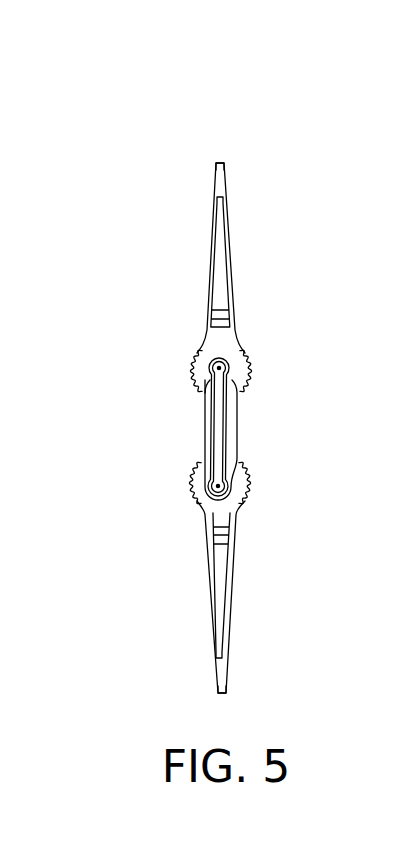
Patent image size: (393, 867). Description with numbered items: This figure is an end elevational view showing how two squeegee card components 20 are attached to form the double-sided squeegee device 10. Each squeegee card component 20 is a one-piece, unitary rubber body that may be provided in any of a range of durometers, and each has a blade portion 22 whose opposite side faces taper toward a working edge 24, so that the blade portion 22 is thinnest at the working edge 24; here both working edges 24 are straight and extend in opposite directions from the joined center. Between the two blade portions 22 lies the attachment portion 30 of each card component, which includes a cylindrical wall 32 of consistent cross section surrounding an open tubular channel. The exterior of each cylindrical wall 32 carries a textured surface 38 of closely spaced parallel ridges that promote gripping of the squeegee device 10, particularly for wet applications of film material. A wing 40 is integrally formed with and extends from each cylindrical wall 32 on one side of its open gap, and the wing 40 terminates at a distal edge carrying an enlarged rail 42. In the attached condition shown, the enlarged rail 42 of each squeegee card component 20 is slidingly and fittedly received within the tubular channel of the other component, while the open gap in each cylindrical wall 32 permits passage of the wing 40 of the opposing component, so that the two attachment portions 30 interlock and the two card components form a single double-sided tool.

The double-sided squeegee device 10 is at (298, 138).
The squeegee card component 20 is at (244, 275).
The blade portion 22 is at (225, 243).
The working edge 24 is at (220, 160).
The attachment portion 30 is at (260, 456).
The cylindrical wall 32 is at (192, 370).
The textured surface 38 is at (196, 350).
The wing 40 is at (228, 413).
The enlarged rail 42 is at (222, 367).